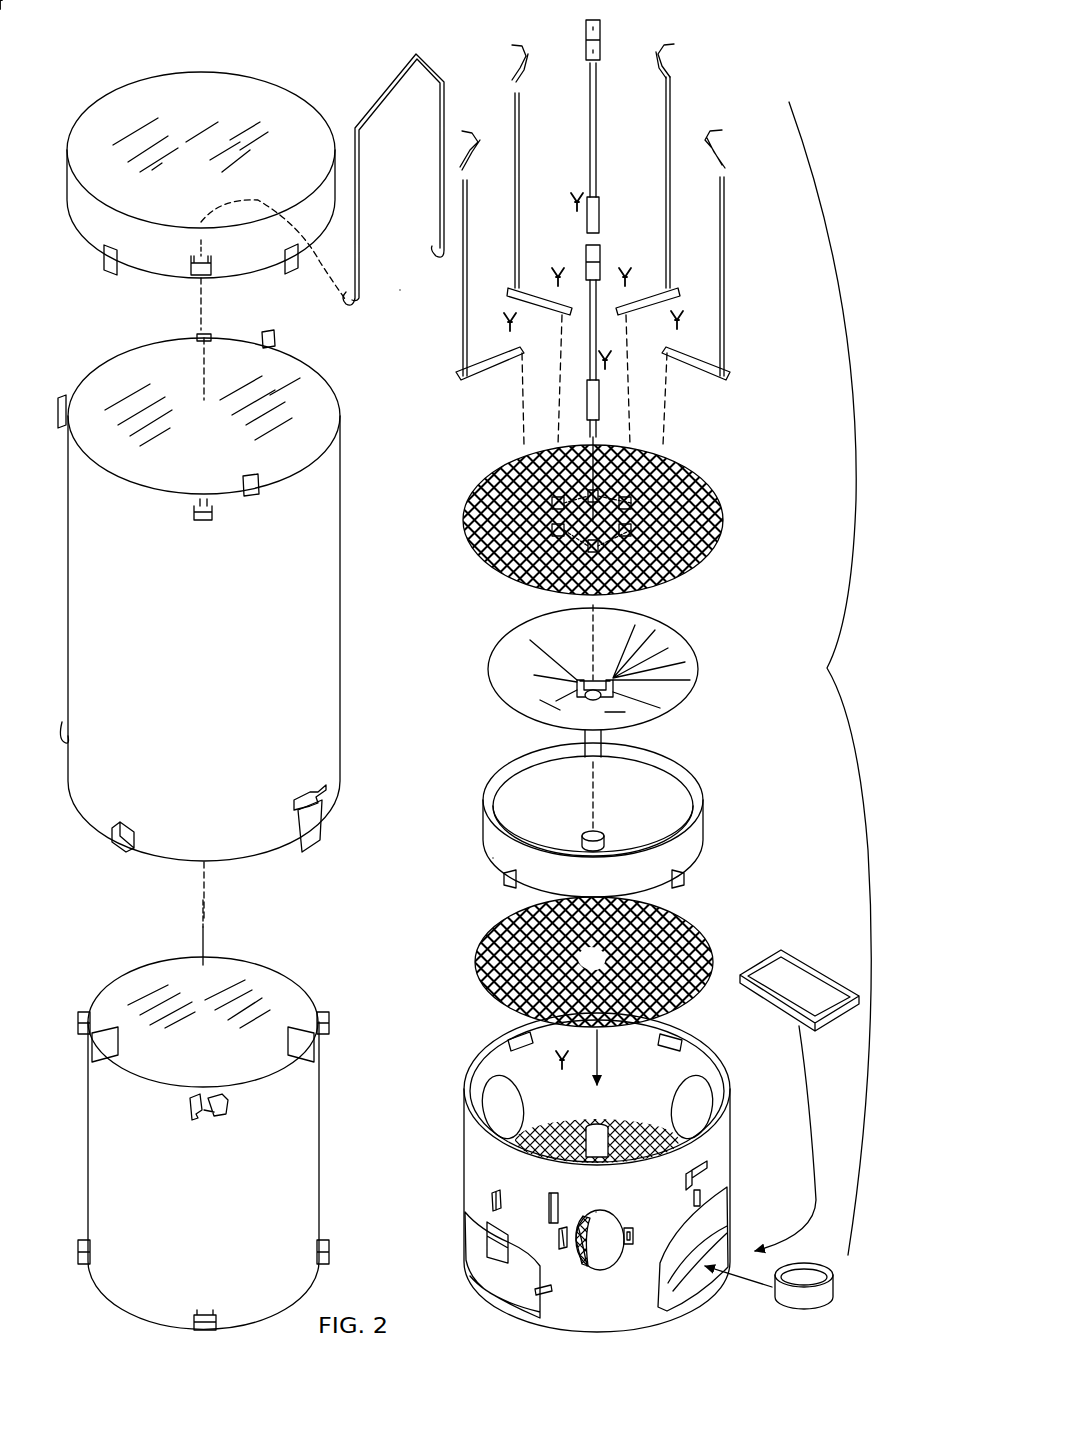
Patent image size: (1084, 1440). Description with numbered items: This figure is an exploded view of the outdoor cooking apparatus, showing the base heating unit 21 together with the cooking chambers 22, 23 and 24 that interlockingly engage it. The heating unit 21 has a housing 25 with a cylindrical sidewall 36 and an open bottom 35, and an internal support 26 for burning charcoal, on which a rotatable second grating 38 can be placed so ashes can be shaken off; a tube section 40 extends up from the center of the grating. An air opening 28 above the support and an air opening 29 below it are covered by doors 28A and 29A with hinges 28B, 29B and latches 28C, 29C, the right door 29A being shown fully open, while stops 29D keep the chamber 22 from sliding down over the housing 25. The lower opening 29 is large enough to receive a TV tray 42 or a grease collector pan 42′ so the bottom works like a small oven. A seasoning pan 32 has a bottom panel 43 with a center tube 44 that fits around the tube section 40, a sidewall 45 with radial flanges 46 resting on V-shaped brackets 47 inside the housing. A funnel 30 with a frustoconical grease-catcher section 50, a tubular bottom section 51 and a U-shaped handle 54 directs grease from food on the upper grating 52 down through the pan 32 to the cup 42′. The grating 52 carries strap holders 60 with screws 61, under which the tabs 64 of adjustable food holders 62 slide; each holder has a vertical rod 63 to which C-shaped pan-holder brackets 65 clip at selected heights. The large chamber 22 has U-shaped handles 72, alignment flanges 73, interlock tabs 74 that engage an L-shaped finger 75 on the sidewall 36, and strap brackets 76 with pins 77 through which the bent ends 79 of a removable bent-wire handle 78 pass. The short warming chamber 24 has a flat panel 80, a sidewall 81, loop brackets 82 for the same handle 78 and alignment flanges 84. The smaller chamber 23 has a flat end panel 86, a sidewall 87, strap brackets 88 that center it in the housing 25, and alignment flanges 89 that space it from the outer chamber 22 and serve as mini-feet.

The base heating unit 21 is at (830, 678).
The cooking chamber 22 is at (335, 352).
The smaller-diameter cooking chamber 23 is at (300, 960).
The short-height cooking chamber 24 is at (290, 70).
The housing 25 is at (638, 1310).
The internal support 26 is at (540, 1130).
The air opening 28 is at (498, 1112).
The door 28A is at (608, 1225).
The hinge 28B is at (634, 1234).
The latch 28C is at (558, 1240).
The air opening 29 is at (715, 1248).
The door 29A is at (480, 1268).
The hinge 29B is at (490, 1245).
The latch 29C is at (492, 1200).
The stops 29D is at (549, 1196).
The funnel 30 is at (718, 668).
The seasoning pan 32 is at (695, 760).
The open bottom 35 is at (715, 1285).
The cylindrical sidewall 36 is at (467, 1158).
The second grating 38 is at (700, 920).
The tube section 40 is at (598, 1125).
The TV tray 42 is at (800, 950).
The grease collector pan 42′ is at (835, 1294).
The bottom panel 43 is at (665, 820).
The center tube 44 is at (588, 832).
The sidewall 45 is at (495, 858).
The radial flanges 46 is at (502, 882).
The V-shaped brackets 47 is at (561, 1070).
The grease-catcher section 50 is at (690, 645).
The tubular bottom section 51 is at (605, 752).
The upper grating 52 is at (700, 475).
The U-shaped handle 54 is at (578, 680).
The strap holders 60 is at (690, 500).
The screws 61 is at (560, 268).
The adjustable food holders 62 is at (445, 368).
The vertical rod 63 is at (722, 200).
The tabs 64 is at (525, 310).
The pan-holder brackets 65 is at (472, 135).
The U-shaped handle 72 is at (64, 730).
The alignment flanges 73 is at (62, 400).
The interlock tabs 74 is at (322, 840).
The L-shaped finger 75 is at (706, 1172).
The strap brackets 76 is at (206, 521).
The pin 77 is at (200, 500).
The bent-wire handle 78 is at (405, 55).
The bent ends 79 is at (598, 368).
The flat panel 80 is at (165, 90).
The sidewall 81 is at (96, 225).
The loop brackets 82 is at (196, 270).
The alignment flanges 84 is at (110, 262).
The flat end panel 86 is at (165, 970).
The sidewall 87 is at (310, 1128).
The strap brackets 88 is at (84, 1010).
The alignment flanges 89 is at (206, 938).